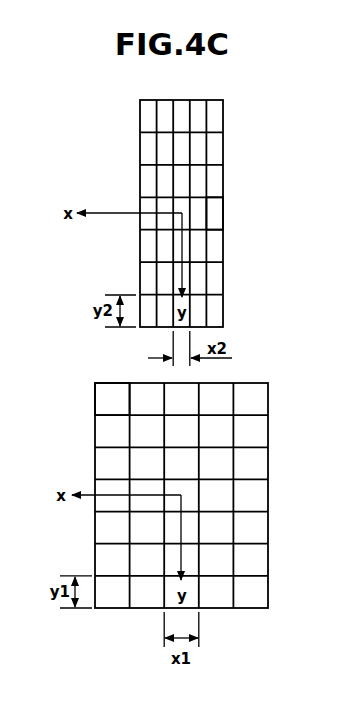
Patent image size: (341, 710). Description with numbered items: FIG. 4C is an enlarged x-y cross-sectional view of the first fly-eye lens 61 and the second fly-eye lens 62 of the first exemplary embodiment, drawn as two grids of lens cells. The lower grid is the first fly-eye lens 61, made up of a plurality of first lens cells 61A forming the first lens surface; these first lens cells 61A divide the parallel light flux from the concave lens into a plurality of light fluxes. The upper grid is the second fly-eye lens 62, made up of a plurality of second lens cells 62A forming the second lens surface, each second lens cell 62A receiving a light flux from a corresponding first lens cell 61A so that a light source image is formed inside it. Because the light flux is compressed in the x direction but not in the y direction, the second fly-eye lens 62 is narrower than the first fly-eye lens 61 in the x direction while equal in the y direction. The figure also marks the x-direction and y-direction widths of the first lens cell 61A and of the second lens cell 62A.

The first fly-eye lens 61 is at (95, 431).
The first lens cell 61A is at (105, 395).
The second fly-eye lens 62 is at (140, 150).
The second lens cell 62A is at (216, 213).